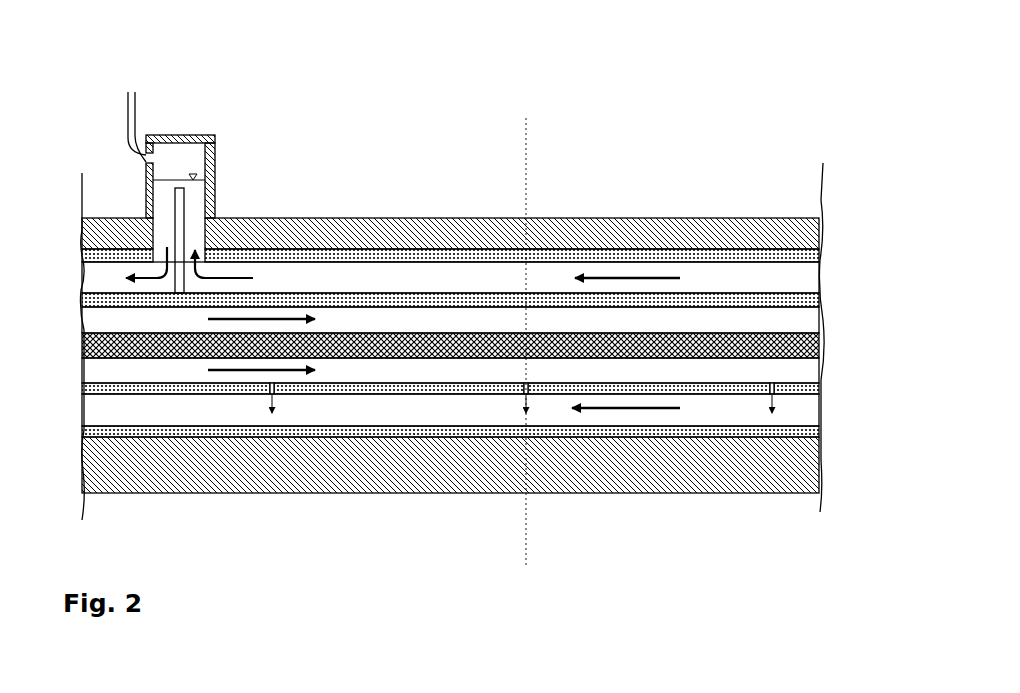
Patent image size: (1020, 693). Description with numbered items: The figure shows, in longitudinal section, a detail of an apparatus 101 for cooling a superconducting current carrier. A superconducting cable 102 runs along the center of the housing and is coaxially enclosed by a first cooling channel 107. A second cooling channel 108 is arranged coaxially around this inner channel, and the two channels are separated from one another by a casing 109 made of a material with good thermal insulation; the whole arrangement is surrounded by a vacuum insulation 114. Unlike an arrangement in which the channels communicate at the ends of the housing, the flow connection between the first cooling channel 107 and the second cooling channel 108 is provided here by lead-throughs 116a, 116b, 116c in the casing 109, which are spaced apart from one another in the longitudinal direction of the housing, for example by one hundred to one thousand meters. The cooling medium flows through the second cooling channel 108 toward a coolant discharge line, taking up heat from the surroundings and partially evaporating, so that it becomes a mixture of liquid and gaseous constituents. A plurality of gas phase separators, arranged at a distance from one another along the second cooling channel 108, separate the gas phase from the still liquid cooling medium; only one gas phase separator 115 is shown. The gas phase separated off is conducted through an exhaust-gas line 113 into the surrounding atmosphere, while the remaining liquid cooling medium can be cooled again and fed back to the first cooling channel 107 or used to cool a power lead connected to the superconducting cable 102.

The apparatus 101 is at (104, 88).
The superconducting cable 102 is at (416, 332).
The first cooling channel 107 is at (358, 318).
The second cooling channel 108 is at (463, 278).
The casing 109 is at (732, 305).
The exhaust-gas line 113 is at (135, 106).
The vacuum insulation 114 is at (577, 222).
The gas phase separator 115 is at (216, 142).
The lead-through 116a is at (293, 395).
The lead-through 116b is at (530, 395).
The lead-through 116c is at (770, 395).